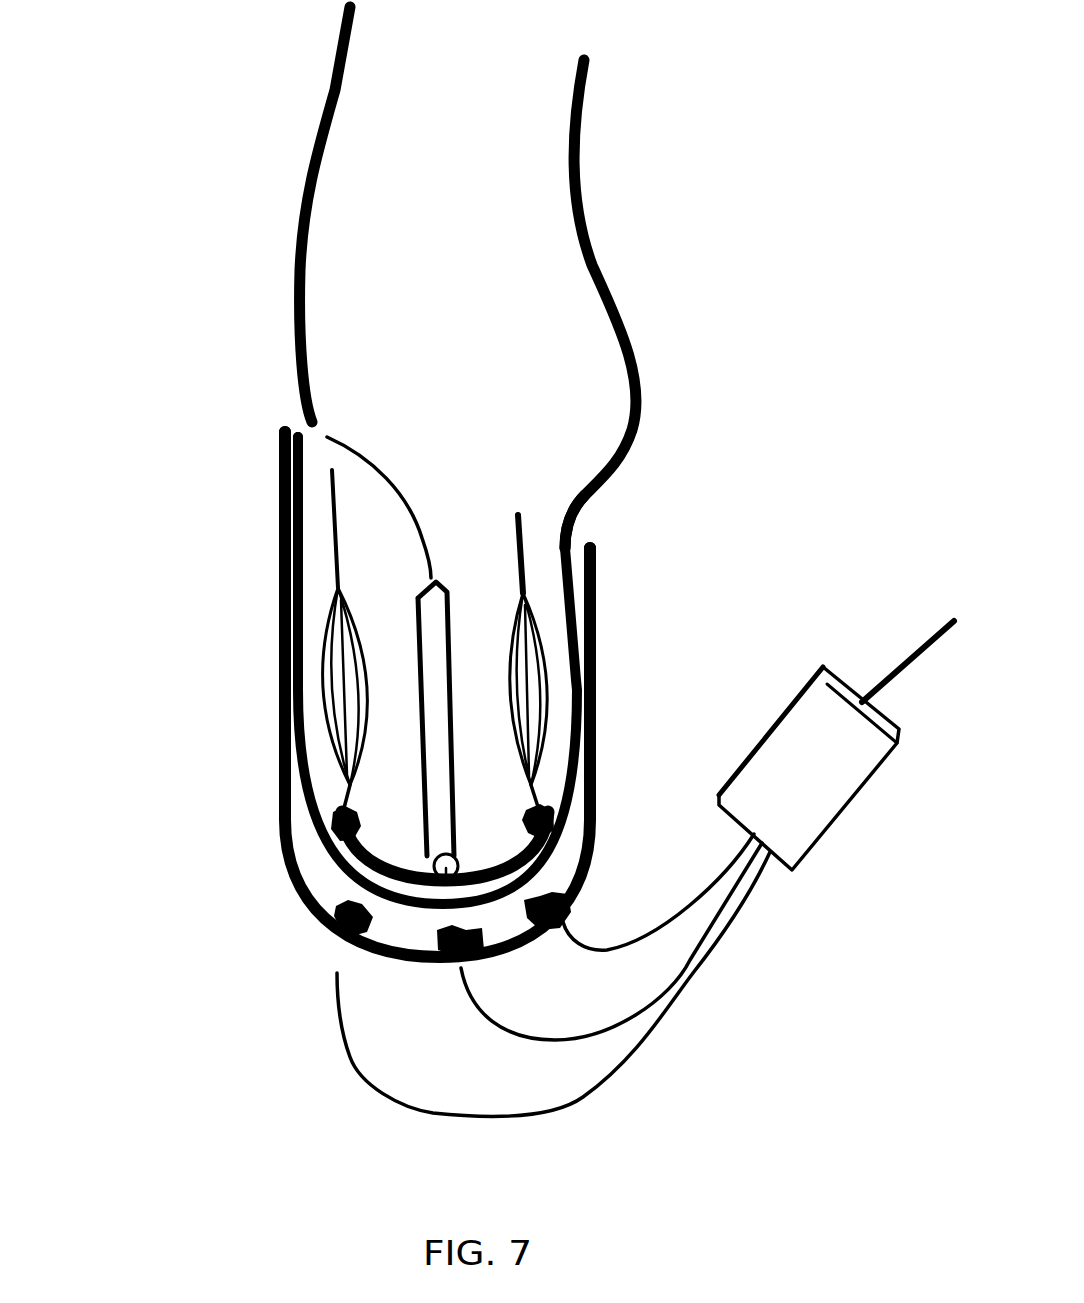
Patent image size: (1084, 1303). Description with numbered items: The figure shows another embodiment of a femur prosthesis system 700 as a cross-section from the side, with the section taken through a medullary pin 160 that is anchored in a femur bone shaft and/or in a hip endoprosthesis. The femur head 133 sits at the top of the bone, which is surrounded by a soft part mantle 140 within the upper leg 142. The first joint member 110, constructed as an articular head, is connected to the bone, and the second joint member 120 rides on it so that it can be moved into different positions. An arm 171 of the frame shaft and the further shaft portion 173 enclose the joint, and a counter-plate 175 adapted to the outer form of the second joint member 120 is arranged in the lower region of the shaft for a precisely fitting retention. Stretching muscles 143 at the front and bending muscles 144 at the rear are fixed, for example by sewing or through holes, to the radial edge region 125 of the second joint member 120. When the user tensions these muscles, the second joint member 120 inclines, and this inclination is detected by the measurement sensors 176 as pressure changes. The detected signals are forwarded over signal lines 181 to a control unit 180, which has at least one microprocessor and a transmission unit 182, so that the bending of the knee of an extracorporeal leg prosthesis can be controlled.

The femur prosthesis system 700 is at (427, 449).
The medullary pin 160 is at (327, 437).
The first joint member 110 is at (400, 968).
The arm 171 is at (285, 705).
The outer wall 173 is at (595, 695).
The femur head 133 is at (566, 532).
The second joint member 120 is at (370, 870).
The upper leg 142 is at (308, 610).
The radial edge region 125 is at (332, 825).
The soft part mantle 140 is at (323, 551).
The stretching muscles 143 is at (342, 675).
The bending muscles 144 is at (533, 653).
The counter-plate 175 is at (437, 905).
The measurement sensors 176 is at (320, 922).
The control unit 180 is at (788, 845).
The signal lines 181 is at (697, 973).
The transmission unit 182 is at (904, 663).